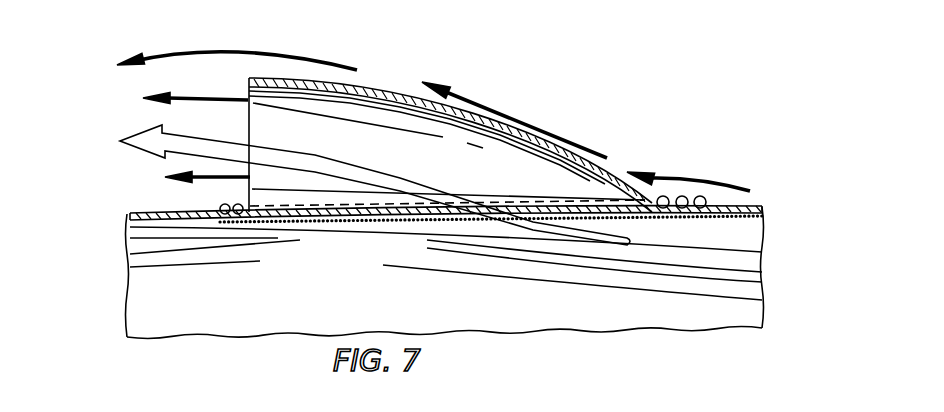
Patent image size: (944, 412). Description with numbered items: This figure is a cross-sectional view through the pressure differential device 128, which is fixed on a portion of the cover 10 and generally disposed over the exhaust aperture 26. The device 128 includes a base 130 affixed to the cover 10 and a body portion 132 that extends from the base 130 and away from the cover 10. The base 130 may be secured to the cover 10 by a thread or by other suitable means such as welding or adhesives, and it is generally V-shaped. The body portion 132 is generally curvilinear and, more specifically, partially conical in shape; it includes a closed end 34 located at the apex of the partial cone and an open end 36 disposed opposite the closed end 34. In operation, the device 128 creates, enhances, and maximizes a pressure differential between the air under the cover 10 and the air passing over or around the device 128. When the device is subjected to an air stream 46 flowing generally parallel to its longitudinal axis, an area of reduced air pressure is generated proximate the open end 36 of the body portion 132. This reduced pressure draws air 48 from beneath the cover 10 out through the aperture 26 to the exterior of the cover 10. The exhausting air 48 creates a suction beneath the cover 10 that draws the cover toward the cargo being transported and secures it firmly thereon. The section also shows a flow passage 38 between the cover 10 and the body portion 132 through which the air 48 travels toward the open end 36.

The cover 10 is at (757, 208).
The exhaust aperture 26 is at (303, 221).
The closed end 34 is at (727, 203).
The open end 36 is at (249, 80).
The flow channel 38 is at (288, 104).
The air stream 46 is at (195, 53).
The exhausting air 48 is at (255, 152).
The pressure differential device 128 is at (408, 92).
The base 130 is at (693, 212).
The body portion 132 is at (392, 88).